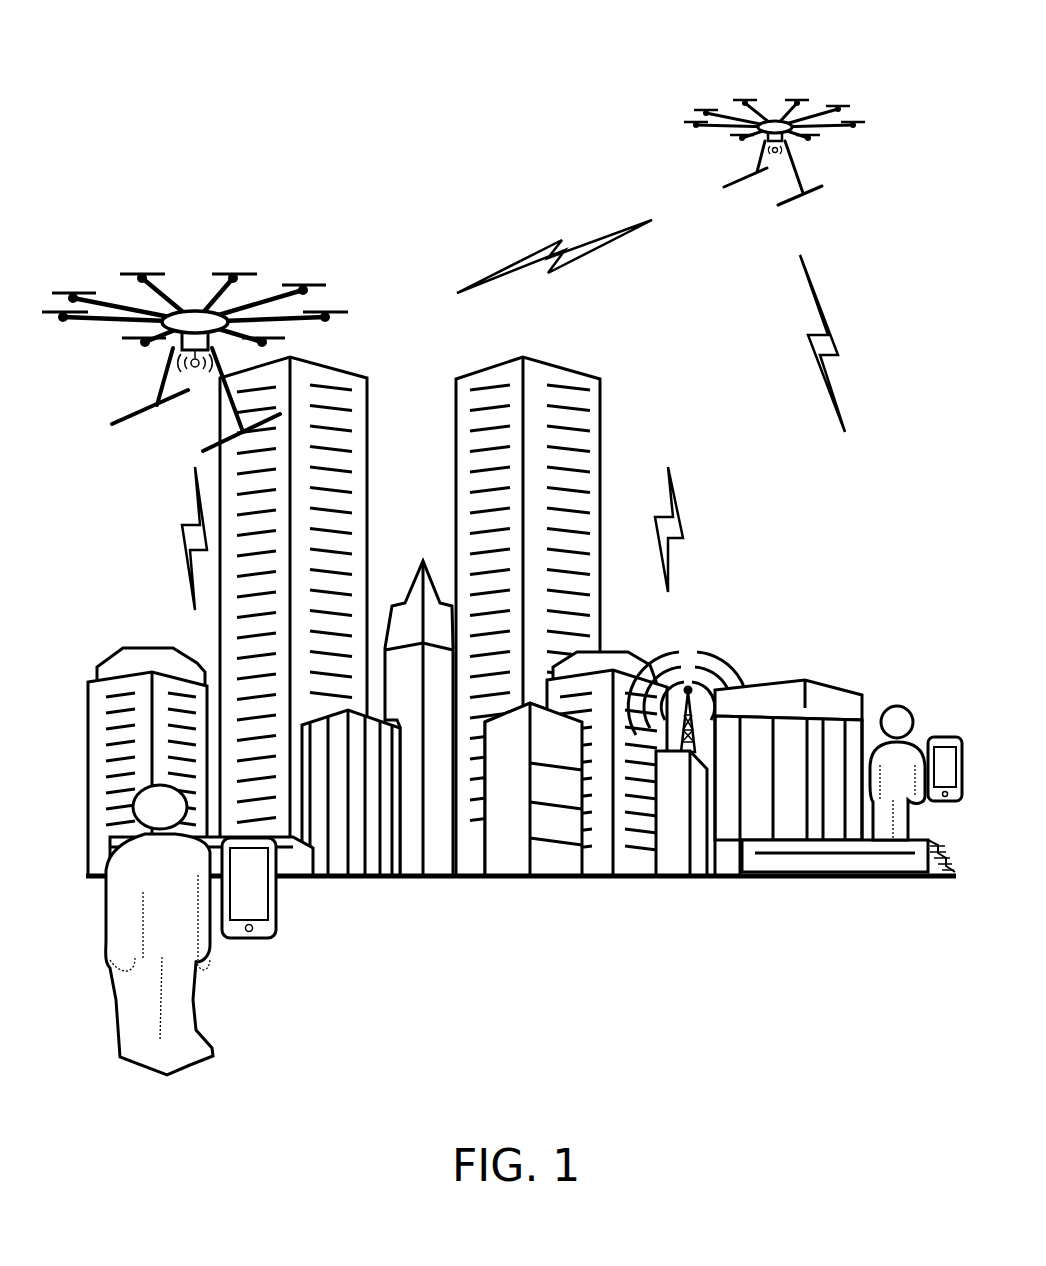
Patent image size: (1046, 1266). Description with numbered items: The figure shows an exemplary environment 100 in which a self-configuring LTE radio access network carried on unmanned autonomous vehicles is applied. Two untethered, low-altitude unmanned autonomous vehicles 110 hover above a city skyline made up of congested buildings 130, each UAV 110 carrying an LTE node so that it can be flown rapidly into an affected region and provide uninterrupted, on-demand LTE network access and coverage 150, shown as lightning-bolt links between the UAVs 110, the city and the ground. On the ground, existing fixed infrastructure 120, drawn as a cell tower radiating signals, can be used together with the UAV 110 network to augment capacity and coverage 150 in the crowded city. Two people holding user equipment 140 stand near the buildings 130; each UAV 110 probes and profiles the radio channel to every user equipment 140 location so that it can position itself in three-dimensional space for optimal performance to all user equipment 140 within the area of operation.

The exemplary environment 100 is at (489, 33).
The unmanned autonomous vehicle 110 is at (480, 247).
The fixed infrastructure 120 is at (713, 638).
The buildings 130 is at (597, 360).
The user equipment 140 is at (292, 905).
The LTE network access and coverage 150 is at (546, 228).